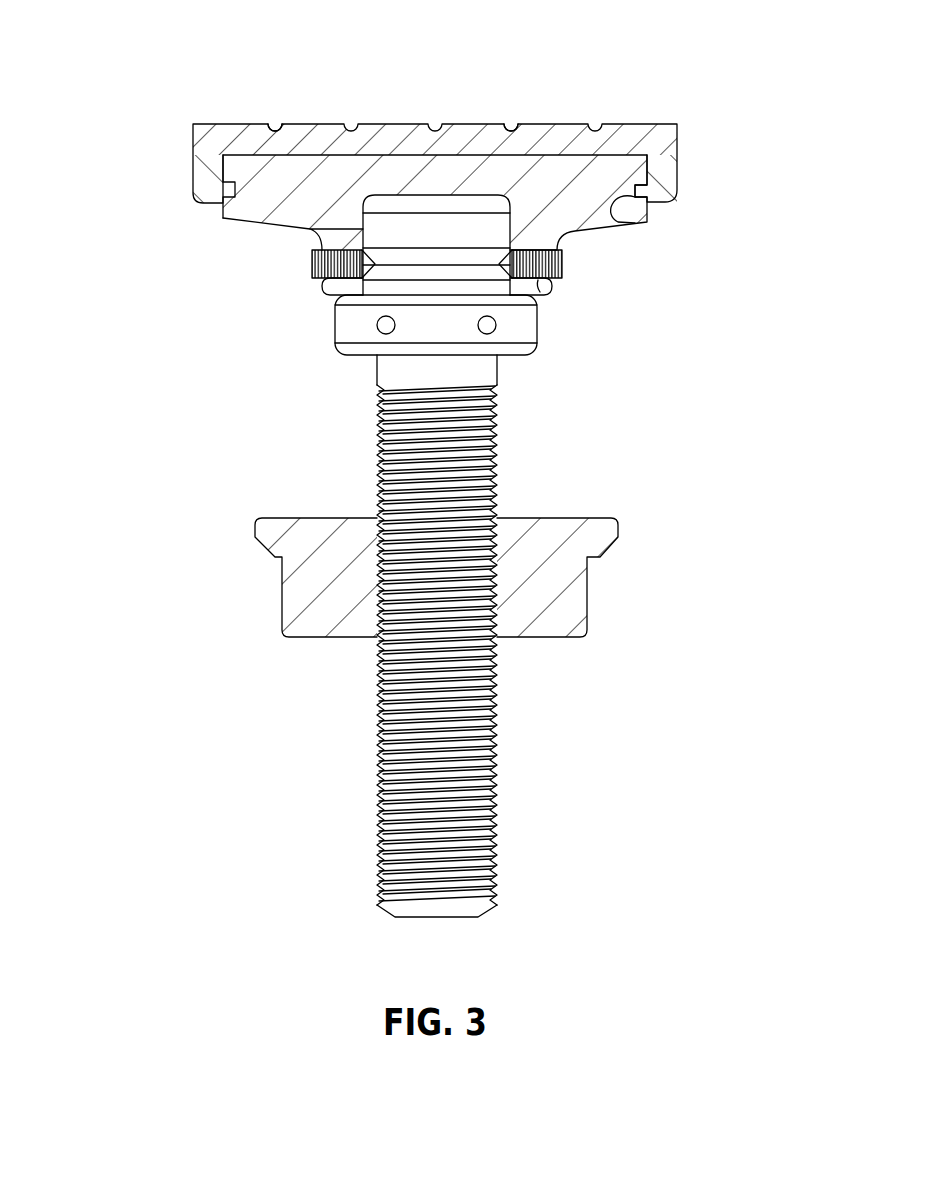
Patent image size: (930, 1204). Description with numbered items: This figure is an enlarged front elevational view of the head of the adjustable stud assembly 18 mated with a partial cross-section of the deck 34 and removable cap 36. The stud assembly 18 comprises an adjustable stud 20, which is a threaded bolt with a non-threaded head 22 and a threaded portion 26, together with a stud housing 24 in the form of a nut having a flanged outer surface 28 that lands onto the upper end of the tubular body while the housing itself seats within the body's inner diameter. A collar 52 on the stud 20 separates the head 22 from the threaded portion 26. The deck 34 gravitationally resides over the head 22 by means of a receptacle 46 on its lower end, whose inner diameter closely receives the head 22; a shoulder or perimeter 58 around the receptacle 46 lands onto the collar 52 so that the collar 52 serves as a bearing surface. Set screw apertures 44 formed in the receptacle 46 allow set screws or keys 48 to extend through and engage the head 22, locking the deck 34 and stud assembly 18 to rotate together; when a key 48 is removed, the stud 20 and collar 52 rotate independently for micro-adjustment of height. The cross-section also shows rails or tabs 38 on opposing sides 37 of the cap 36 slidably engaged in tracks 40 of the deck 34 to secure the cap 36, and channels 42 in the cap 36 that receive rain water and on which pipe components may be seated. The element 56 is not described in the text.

The adjustable stud assembly 18 is at (422, 474).
The adjustable stud 20 is at (410, 556).
The head 22 is at (320, 245).
The stud housing 24 is at (494, 537).
The threaded portion 26 is at (497, 812).
The flanged outer surface 28 is at (618, 523).
The deck 34 is at (415, 236).
The removable cap 36 is at (431, 203).
The opposing sides 37 is at (193, 165).
The tabs 38 is at (617, 222).
The tracks 40 is at (225, 204).
The channels 42 is at (274, 122).
The set screw apertures 44 is at (313, 288).
The receptacle 46 is at (260, 203).
The set screws 48 is at (314, 265).
The collar 52 is at (439, 374).
The hole 56 is at (475, 292).
The perimeter 58 is at (548, 125).